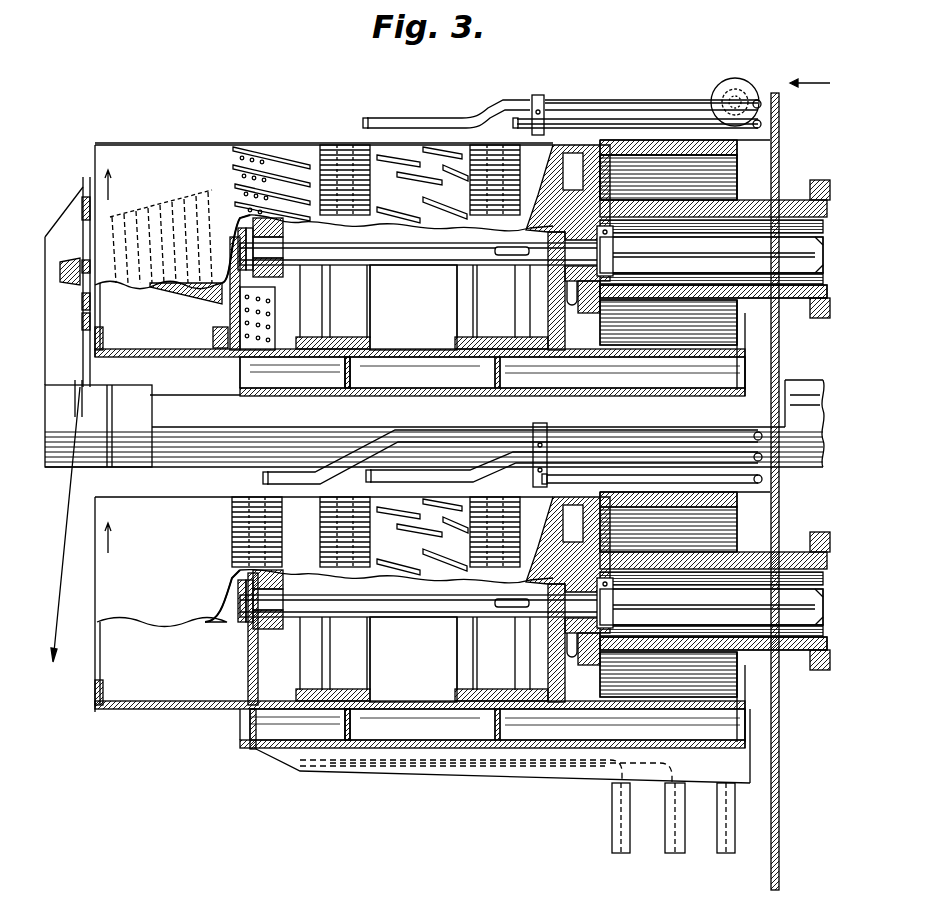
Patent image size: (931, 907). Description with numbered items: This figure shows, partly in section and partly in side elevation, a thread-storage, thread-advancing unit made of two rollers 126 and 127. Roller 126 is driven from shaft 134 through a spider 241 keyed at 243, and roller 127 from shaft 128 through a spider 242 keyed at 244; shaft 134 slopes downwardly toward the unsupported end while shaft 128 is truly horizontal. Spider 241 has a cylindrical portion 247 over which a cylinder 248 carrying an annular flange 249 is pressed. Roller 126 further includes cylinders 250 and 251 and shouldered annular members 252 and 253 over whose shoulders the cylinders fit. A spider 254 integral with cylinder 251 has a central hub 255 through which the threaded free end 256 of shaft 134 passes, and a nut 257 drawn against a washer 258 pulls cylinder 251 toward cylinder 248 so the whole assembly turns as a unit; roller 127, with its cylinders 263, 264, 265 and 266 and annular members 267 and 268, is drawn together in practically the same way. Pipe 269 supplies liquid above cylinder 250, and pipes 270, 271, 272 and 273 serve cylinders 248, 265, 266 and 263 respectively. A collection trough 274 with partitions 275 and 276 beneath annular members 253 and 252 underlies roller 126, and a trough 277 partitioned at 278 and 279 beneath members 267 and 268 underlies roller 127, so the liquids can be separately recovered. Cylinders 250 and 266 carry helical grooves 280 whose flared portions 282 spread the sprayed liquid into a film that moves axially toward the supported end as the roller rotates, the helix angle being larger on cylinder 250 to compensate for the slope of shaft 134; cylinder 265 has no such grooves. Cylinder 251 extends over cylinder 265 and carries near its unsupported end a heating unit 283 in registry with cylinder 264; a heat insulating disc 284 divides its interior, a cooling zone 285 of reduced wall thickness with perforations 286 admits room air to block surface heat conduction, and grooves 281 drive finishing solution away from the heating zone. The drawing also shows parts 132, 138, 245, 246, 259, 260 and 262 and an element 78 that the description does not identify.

The hydraulic line 78 is at (743, 80).
The roller 126 is at (166, 141).
The roller 127 is at (172, 495).
The shaft 128 is at (732, 615).
The lower sleeve 132 is at (738, 563).
The shaft 134 is at (740, 255).
The upper sleeve 138 is at (740, 205).
The spider 241 is at (555, 320).
The spider 242 is at (570, 685).
The key 243 is at (512, 257).
The key 244 is at (513, 608).
The bushing 245 is at (625, 283).
The bushing 246 is at (618, 637).
The cylindrical portion 247 is at (605, 331).
The cylinder 248 is at (620, 360).
The annular flange 249 is at (737, 160).
The cylinder 250 is at (412, 362).
The cylinder 251 is at (208, 143).
The shouldered annular member 252 is at (466, 325).
The shouldered annular member 253 is at (345, 332).
The spider 254 is at (266, 300).
The central hub 255 is at (316, 265).
The threaded free end 256 is at (270, 238).
The nut 257 is at (232, 300).
The washer 258 is at (240, 216).
The nut 259 is at (272, 580).
The end plate 260 is at (250, 648).
The cover 262 is at (234, 585).
The cylinder 263 is at (654, 706).
The cylinder 264 is at (210, 714).
The cylinder 265 is at (294, 712).
The cylinder 266 is at (414, 714).
The annular member 267 is at (345, 690).
The annular member 268 is at (472, 688).
The pipe 269 is at (598, 98).
The pipe 270 is at (646, 118).
The pipe 271 is at (352, 445).
The pipe 272 is at (450, 470).
The pipe 273 is at (692, 477).
The collection trough 274 is at (250, 398).
The partition 275 is at (362, 398).
The partition 276 is at (508, 372).
The trough 277 is at (266, 757).
The partition 278 is at (354, 732).
The partition 279 is at (505, 738).
The grooves 280 is at (418, 176).
The grooves 281 is at (297, 150).
The flared portions 282 is at (457, 120).
The heating unit 283 is at (168, 290).
The heat insulating disc 284 is at (226, 346).
The cooling zone 285 is at (276, 340).
The perforations 286 is at (258, 152).